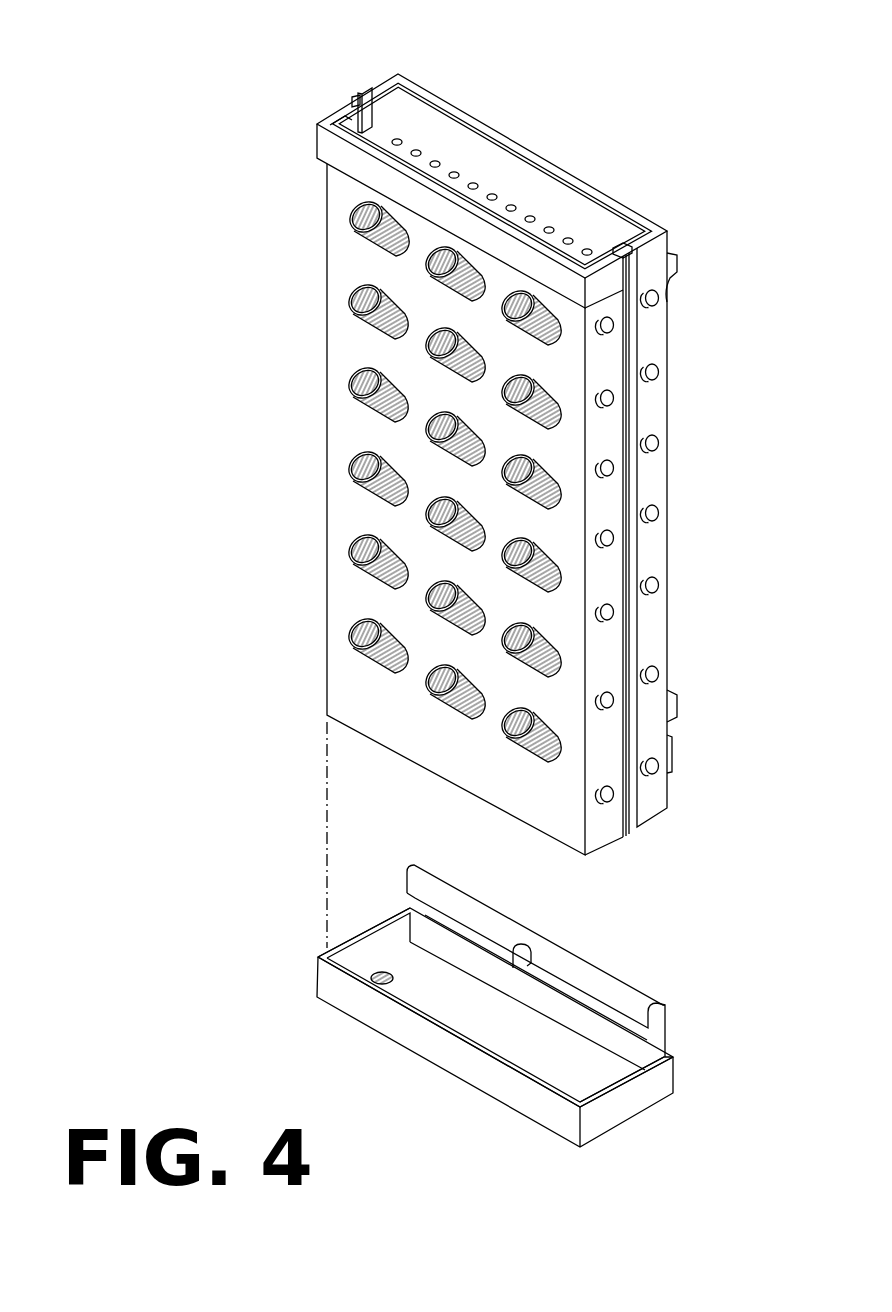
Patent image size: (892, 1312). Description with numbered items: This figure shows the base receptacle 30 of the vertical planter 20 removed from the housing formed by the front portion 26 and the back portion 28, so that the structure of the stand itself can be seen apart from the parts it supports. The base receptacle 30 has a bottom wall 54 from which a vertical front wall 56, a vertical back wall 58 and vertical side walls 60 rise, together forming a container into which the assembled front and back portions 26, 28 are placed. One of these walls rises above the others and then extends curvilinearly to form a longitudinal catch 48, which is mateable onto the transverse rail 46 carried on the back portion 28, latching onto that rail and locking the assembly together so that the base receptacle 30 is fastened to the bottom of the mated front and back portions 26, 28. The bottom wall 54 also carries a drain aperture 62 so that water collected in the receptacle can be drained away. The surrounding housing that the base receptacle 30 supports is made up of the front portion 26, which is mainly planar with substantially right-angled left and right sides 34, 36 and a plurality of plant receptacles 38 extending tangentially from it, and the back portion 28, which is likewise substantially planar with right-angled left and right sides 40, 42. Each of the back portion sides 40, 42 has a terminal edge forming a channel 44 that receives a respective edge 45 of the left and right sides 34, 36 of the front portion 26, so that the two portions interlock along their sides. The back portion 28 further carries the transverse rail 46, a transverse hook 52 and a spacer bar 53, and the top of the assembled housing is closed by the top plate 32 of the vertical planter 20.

The vertical planter 20 is at (178, 496).
The front portion 26 is at (320, 452).
The back portion 28 is at (549, 146).
The base receptacle 30 is at (470, 1090).
The top plate 32 is at (440, 127).
The left side of front portion 34 is at (347, 120).
The right side of front portion 36 is at (612, 651).
The plant receptacle 38 is at (360, 637).
The left side of back portion 40 is at (658, 403).
The right side of back portion 42 is at (390, 93).
The channel 44 is at (367, 107).
The edge of left and right sides 45 is at (356, 100).
The transverse rail 46 is at (672, 757).
The longitudinal catch 48 is at (593, 975).
The transverse hook 52 is at (673, 272).
The spacer bar 53 is at (677, 700).
The bottom wall 54 is at (473, 998).
The vertical front wall 56 is at (383, 1018).
The vertical back wall 58 is at (640, 1053).
The vertical side wall 60 is at (378, 943).
The drain aperture 62 is at (382, 979).